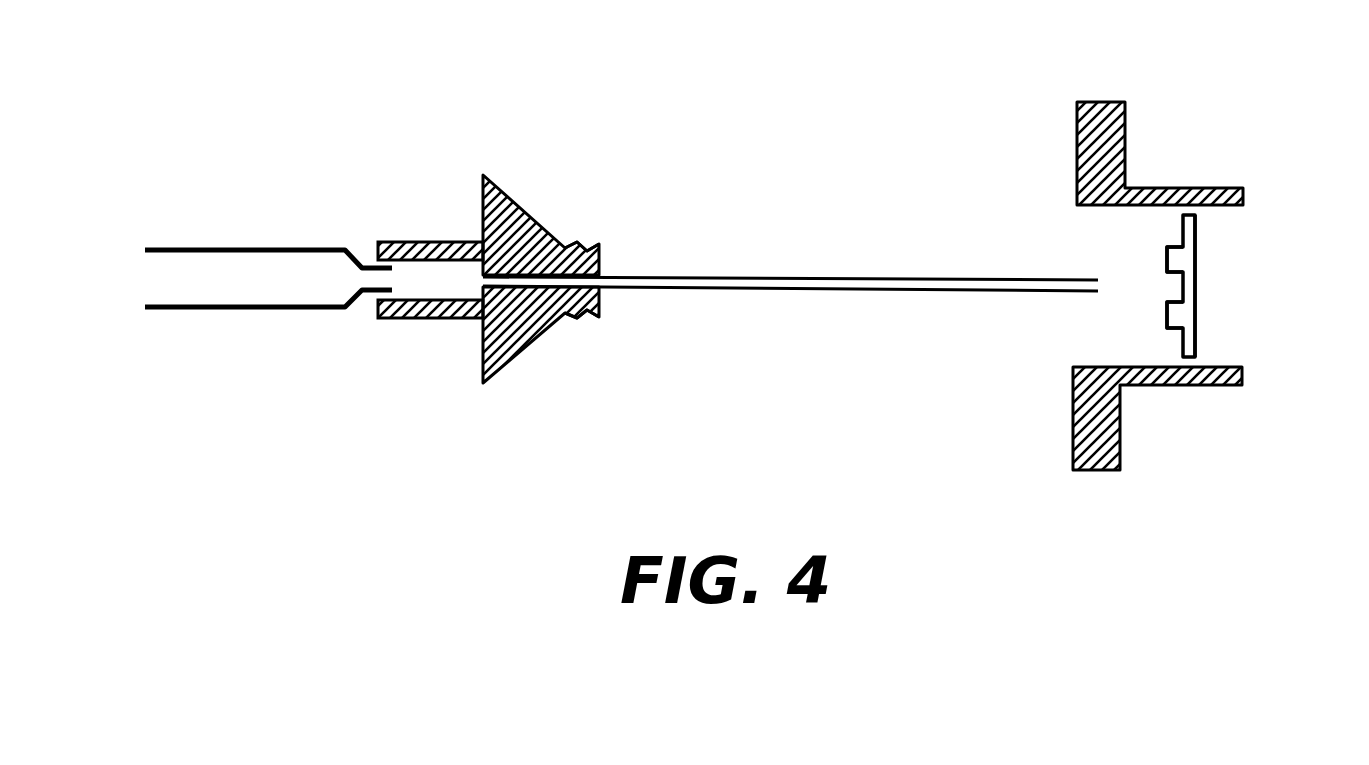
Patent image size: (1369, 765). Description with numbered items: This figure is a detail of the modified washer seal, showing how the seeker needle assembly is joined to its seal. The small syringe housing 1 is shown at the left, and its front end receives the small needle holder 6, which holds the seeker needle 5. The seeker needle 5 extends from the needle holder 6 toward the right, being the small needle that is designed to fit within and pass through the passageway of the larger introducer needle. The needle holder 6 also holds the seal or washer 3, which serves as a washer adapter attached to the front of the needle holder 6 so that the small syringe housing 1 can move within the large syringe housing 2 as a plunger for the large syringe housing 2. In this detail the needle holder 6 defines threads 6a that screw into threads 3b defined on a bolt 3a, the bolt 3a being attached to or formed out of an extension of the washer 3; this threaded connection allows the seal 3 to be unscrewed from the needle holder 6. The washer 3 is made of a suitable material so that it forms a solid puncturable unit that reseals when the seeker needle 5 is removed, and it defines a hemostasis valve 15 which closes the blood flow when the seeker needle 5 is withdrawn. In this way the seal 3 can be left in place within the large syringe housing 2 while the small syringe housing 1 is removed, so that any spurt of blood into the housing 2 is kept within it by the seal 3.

The small syringe housing 1 is at (298, 250).
The large syringe housing 2 is at (1080, 188).
The washer 3 is at (1209, 266).
The bolt 3a is at (1167, 332).
The threads 3b is at (1172, 271).
The seeker needle 5 is at (657, 289).
The small needle holder 6 is at (496, 378).
The threads 6a is at (572, 247).
The hemostasis valve 15 is at (1196, 280).